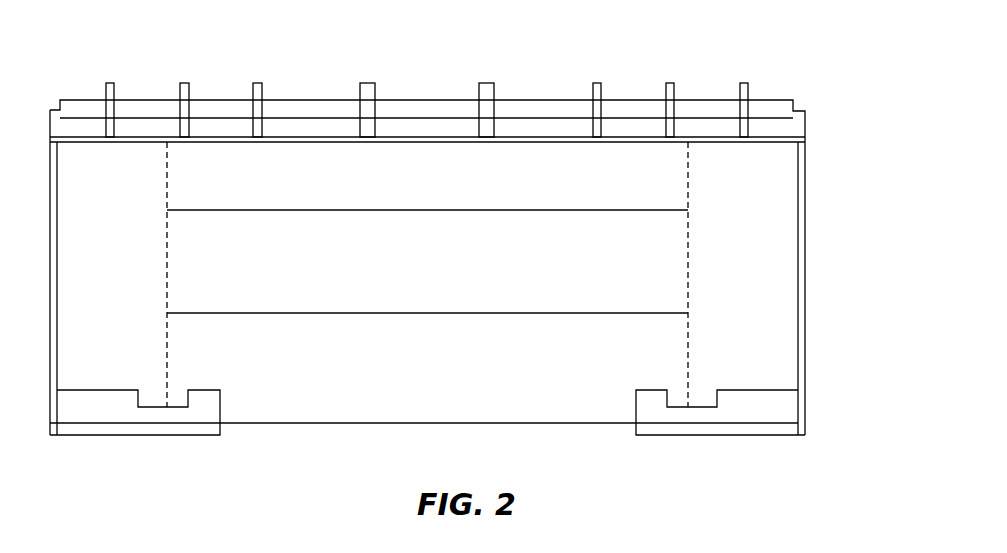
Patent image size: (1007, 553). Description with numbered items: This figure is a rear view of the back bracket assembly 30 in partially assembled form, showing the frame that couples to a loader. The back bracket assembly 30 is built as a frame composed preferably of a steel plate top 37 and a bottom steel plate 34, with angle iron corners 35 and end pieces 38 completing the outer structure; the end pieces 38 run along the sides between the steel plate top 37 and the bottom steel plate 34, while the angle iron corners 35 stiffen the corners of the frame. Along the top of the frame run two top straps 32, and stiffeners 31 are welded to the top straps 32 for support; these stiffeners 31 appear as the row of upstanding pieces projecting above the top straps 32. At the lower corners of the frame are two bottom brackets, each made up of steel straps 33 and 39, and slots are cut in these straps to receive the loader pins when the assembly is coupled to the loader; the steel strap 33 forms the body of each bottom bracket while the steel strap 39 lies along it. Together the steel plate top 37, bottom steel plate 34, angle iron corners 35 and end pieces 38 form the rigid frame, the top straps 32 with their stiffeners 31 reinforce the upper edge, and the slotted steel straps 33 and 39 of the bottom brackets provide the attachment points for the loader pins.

The back bracket assembly 30 is at (624, 33).
The stiffeners 31 is at (258, 83).
The top straps 32 is at (787, 128).
The steel strap of bottom bracket 33 is at (120, 408).
The bottom steel plate 34 is at (488, 402).
The angle iron corners 35 is at (748, 201).
The steel plate top 37 is at (393, 160).
The end pieces 38 is at (55, 190).
The steel strap of bottom bracket 39 is at (100, 427).